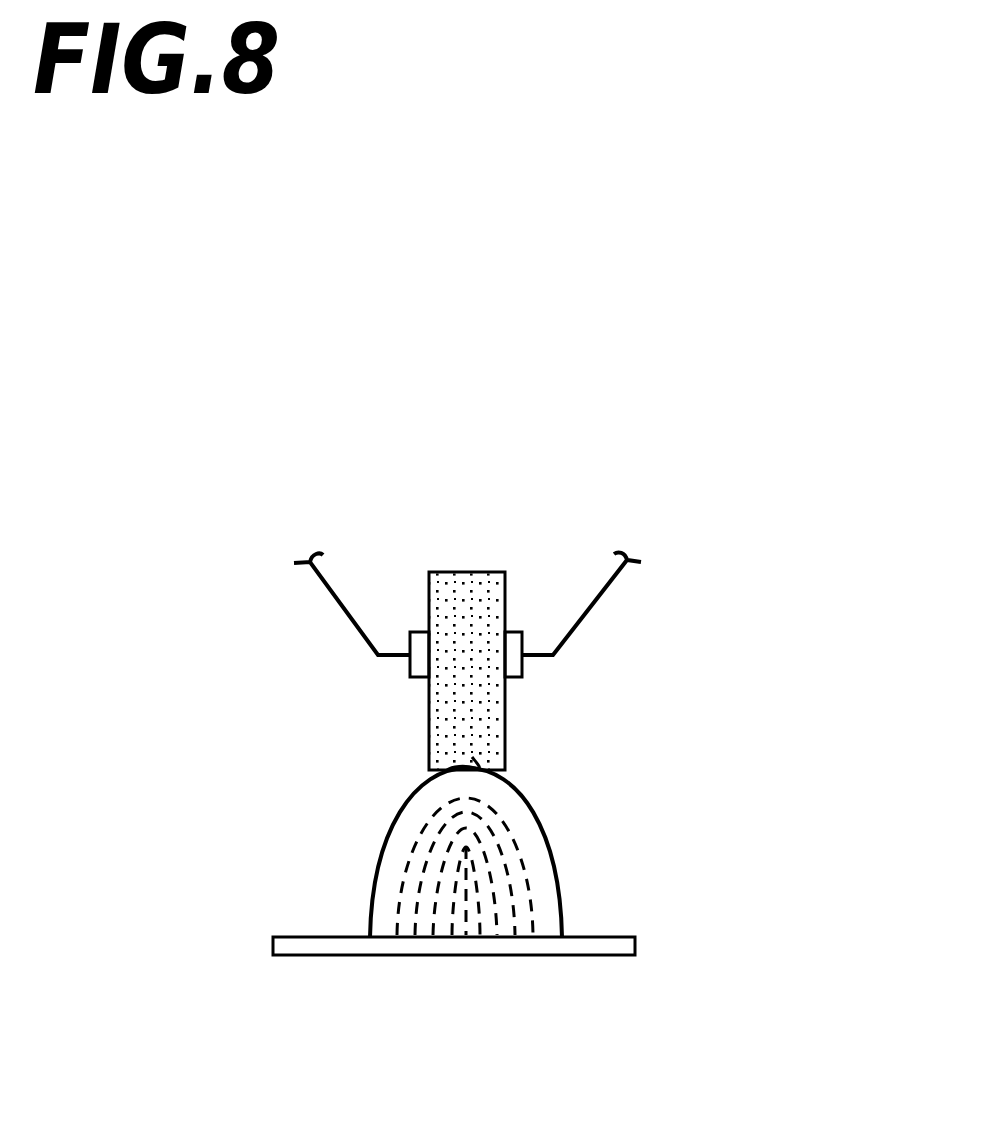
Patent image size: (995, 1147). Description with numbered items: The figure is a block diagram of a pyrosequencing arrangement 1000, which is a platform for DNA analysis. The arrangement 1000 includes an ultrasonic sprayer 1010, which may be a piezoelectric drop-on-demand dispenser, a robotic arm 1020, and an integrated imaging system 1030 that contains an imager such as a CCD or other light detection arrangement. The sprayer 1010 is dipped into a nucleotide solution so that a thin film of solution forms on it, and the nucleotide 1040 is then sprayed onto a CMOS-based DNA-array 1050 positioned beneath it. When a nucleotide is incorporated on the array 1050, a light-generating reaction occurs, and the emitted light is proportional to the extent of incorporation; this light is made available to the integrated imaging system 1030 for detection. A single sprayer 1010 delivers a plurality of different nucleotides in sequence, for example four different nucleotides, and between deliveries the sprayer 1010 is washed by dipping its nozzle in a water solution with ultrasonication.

The pyrosequencing arrangement 1000 is at (193, 425).
The integrated imaging system 1030 is at (467, 572).
The robotic arm 1020 is at (515, 637).
The ultrasonic sprayer 1010 is at (457, 767).
The nucleotide 1040 is at (547, 850).
The CMOS-based DNA-array 1050 is at (600, 935).